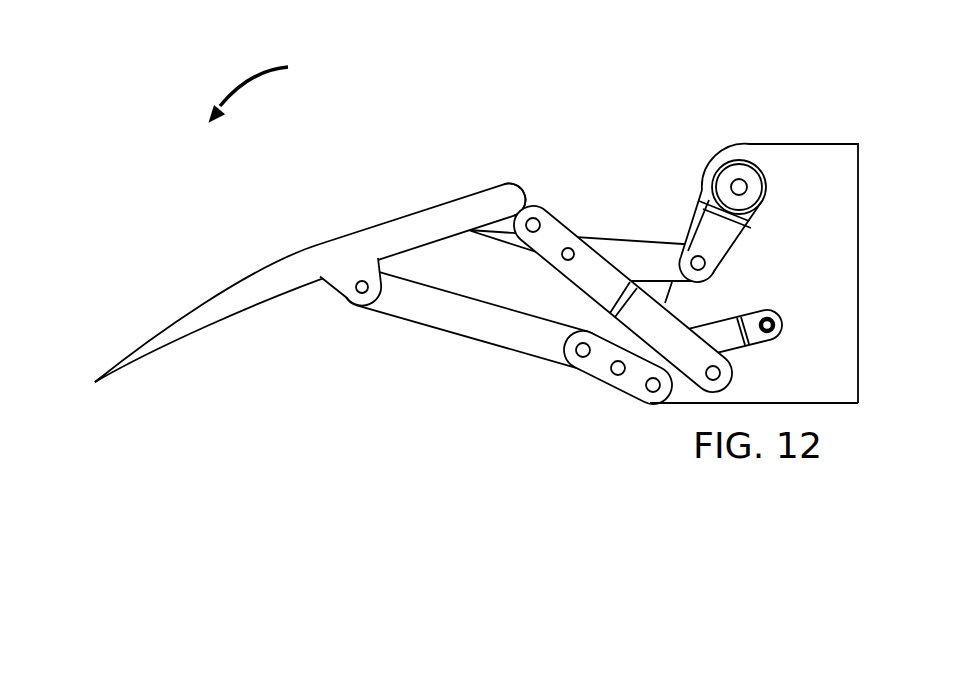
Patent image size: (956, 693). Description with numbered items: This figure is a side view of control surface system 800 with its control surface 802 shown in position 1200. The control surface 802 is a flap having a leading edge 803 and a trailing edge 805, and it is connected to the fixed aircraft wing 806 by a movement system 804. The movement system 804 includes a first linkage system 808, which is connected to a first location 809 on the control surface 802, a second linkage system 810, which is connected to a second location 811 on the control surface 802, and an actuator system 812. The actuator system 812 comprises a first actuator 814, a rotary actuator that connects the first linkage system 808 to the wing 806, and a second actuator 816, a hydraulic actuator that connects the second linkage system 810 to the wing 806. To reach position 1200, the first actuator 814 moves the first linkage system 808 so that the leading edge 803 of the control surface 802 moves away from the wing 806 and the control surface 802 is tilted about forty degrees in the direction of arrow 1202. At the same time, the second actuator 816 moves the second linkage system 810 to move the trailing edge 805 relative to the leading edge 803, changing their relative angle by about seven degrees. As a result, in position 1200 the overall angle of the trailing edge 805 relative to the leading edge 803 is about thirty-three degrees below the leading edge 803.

The control surface system 800 is at (750, 87).
The control surface 802 is at (425, 202).
The leading edge 803 is at (483, 182).
The movement system 804 is at (607, 387).
The trailing edge 805 is at (95, 380).
The wing 806 is at (805, 143).
The first linkage system 808 is at (677, 230).
The first location 809 is at (527, 202).
The second linkage system 810 is at (452, 335).
The second location 811 is at (347, 260).
The actuator system 812 is at (738, 243).
The first actuator 814 is at (768, 187).
The second actuator 816 is at (772, 343).
The position 1200 is at (260, 265).
The arrow 1202 is at (245, 70).